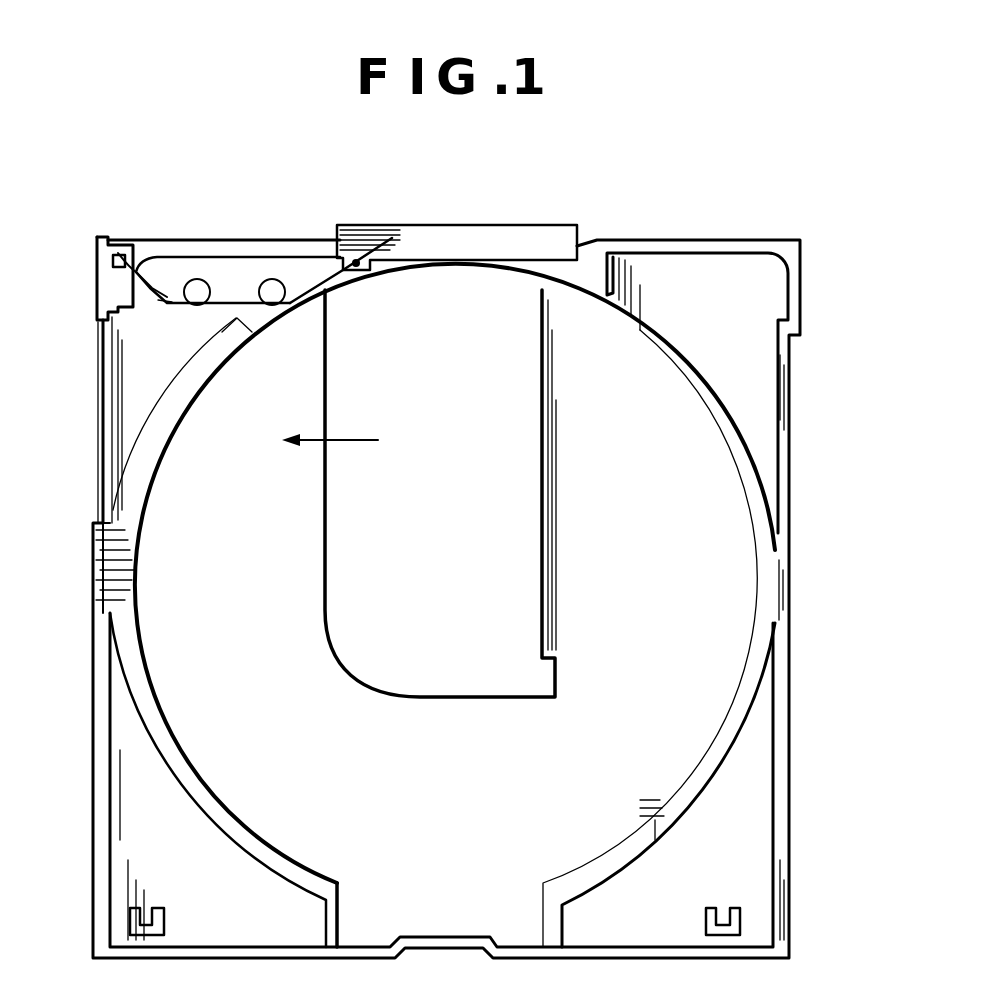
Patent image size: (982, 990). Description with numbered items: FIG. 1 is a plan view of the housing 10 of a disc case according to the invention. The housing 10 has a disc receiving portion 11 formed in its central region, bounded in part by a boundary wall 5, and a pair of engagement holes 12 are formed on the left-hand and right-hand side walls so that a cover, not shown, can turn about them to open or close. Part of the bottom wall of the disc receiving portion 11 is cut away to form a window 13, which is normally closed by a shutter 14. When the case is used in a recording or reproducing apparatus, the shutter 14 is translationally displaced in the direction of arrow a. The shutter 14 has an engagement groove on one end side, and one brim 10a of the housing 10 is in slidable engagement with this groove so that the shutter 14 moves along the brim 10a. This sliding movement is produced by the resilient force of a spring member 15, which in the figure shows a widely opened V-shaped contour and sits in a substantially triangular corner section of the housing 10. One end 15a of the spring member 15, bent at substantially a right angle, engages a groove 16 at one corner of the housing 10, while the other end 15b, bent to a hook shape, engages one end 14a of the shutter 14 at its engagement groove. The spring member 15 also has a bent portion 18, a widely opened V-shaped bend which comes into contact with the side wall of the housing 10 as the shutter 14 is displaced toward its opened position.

The housing 10 is at (742, 205).
The brim 10a is at (290, 246).
The disc receiving portion 11 is at (713, 623).
The engagement holes 12 is at (103, 350).
The window 13 is at (325, 605).
The shutter 14 is at (478, 240).
The one end of the shutter 14a is at (365, 260).
The spring member 15 is at (233, 303).
The one end of the spring member 15a is at (122, 256).
The other end of the spring member 15b is at (356, 259).
The groove 16 is at (113, 261).
The bent portion 18 is at (160, 303).
The boundary wall 5 is at (155, 420).
The arrow-marked direction a is at (348, 440).